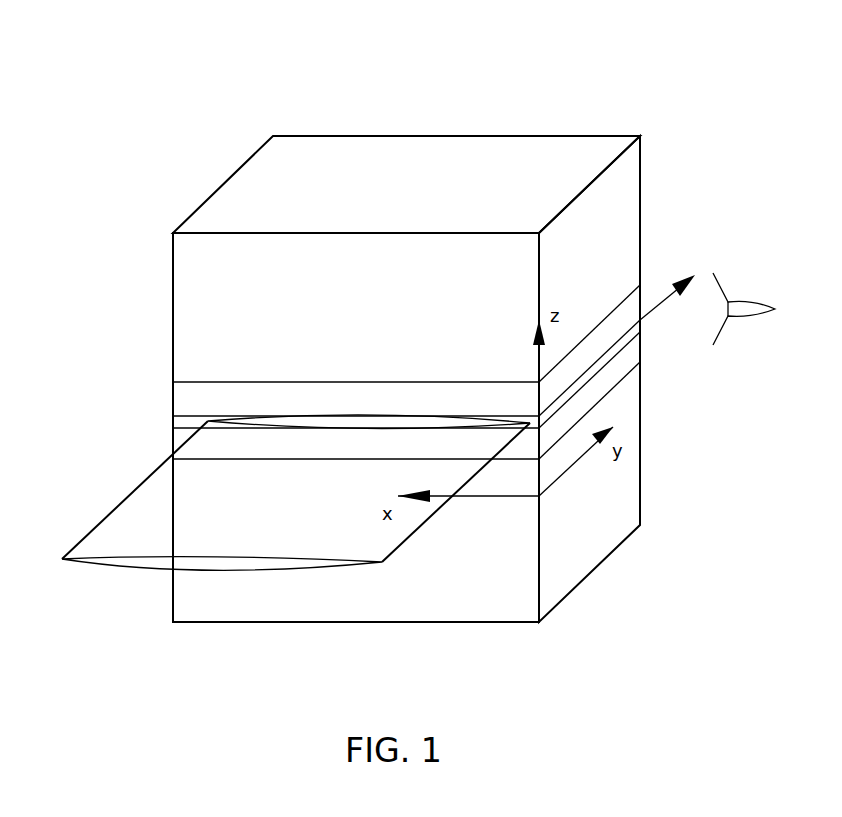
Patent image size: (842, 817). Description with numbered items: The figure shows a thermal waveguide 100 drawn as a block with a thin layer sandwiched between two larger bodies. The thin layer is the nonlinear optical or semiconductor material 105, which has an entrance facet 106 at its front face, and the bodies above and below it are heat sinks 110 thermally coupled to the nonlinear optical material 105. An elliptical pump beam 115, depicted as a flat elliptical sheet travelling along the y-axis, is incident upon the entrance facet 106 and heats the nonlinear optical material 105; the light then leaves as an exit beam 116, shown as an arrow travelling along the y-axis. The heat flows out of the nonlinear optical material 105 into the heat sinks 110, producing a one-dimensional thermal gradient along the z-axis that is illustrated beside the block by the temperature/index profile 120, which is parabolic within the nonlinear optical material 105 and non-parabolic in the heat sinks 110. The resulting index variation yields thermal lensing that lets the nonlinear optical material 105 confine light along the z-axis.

The thermal waveguide 100 is at (236, 84).
The nonlinear optical or semiconductor material 105 is at (156, 381).
The entrance facet 106 is at (542, 429).
The heat sinks 110 is at (617, 200).
The elliptical pump beam 115 is at (62, 559).
The exit beam 116 is at (650, 318).
The temperature/index profile 120 is at (752, 317).